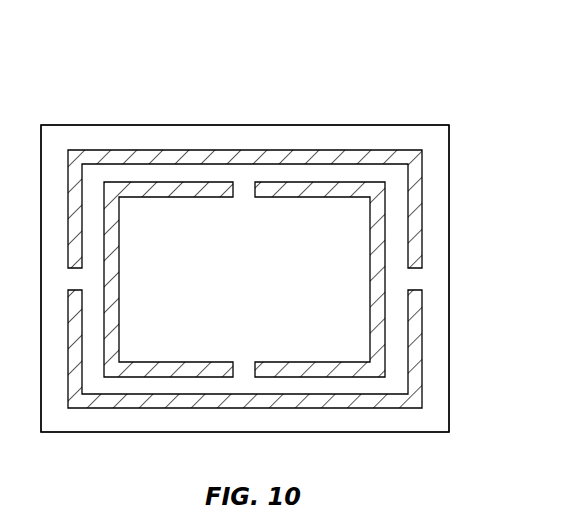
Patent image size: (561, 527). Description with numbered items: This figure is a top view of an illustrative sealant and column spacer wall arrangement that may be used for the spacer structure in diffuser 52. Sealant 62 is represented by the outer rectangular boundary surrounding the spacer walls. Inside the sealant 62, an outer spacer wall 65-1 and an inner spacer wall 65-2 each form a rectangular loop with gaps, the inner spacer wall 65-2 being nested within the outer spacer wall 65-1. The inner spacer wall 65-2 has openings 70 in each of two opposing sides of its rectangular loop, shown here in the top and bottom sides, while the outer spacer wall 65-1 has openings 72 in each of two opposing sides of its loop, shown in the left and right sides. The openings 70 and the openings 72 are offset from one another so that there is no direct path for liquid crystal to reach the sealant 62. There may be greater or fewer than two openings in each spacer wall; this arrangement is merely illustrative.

The diffuser 52 is at (437, 84).
The sealant 62 is at (440, 392).
The outer spacer wall 65-1 is at (422, 328).
The inner spacer wall 65-2 is at (385, 216).
The openings 70 is at (247, 200).
The openings 72 is at (86, 278).